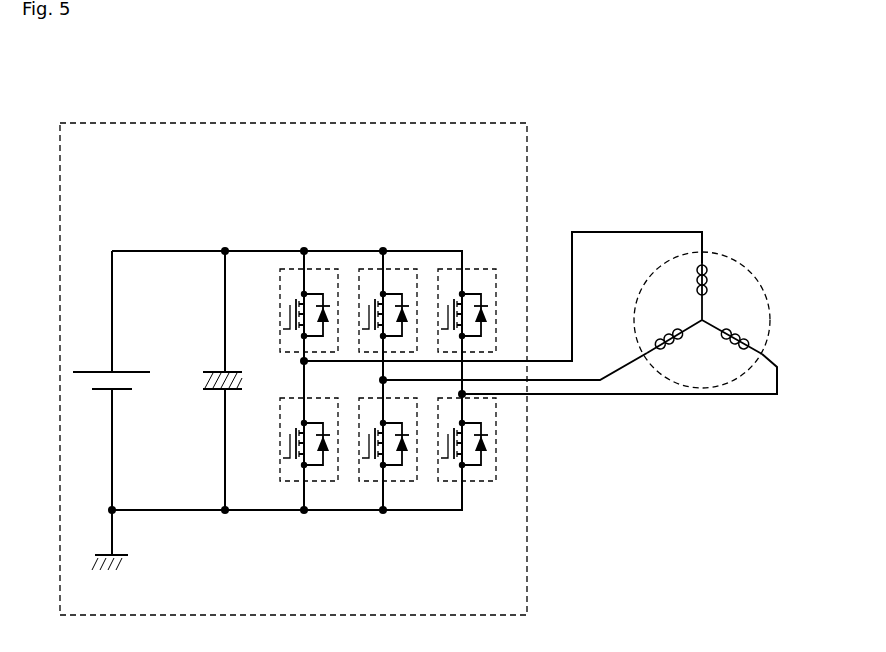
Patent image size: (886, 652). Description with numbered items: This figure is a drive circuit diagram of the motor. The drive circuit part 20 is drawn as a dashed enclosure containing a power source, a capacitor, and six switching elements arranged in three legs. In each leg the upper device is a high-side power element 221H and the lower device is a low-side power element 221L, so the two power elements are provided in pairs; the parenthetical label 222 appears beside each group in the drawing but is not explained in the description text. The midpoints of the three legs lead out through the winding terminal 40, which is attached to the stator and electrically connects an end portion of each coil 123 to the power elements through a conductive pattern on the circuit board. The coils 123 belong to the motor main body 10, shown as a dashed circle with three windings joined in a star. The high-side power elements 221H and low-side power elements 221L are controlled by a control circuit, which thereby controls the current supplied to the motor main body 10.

The drive circuit part 20 is at (290, 122).
The high-side power element 221H is at (435, 268).
The low-side power element 221L is at (447, 482).
The switching element (MOSFET) 222 is at (374, 377).
The winding terminal 40 is at (635, 394).
The motor main body 10 is at (713, 328).
The coil 123 is at (702, 296).